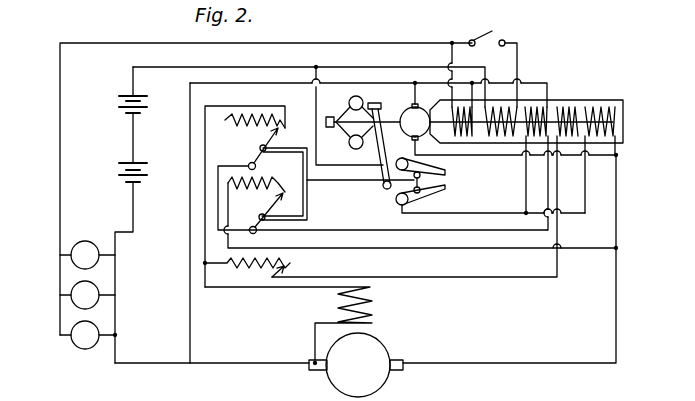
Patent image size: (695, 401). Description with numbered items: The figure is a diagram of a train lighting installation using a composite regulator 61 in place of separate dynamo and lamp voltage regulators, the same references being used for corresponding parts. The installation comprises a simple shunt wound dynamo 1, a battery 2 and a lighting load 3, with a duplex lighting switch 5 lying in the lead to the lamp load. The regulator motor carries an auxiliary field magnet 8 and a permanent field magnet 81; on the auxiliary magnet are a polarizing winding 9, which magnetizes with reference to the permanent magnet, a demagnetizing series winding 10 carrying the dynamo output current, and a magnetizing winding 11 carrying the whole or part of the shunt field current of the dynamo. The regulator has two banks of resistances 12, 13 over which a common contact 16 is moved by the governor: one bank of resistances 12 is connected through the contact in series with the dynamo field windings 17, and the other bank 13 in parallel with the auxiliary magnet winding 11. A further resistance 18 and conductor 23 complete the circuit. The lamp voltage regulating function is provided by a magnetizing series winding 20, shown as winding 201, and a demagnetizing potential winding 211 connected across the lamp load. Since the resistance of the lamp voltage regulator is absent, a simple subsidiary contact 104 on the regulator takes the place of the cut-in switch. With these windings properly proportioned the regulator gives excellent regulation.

The dynamo 1 is at (378, 348).
The battery 2 is at (131, 139).
The lighting load 3 is at (82, 242).
The duplex lighting switch 5 is at (488, 33).
The auxiliary field magnet 8 is at (437, 108).
The permanent field magnet 81 is at (592, 100).
The polarizing winding 9 is at (568, 107).
The demagnetizing series winding 10 is at (613, 122).
The magnetizing winding 11 is at (538, 107).
The bank of resistances 12 is at (225, 120).
The bank of resistances 13 is at (228, 184).
The common contact 16 is at (308, 202).
The dynamo field windings 17 is at (372, 302).
The rheostat 18 is at (283, 262).
The magnetizing series winding 20 is at (471, 136).
The magnetizing series winding 201 is at (505, 137).
The demagnetizing potential winding 211 is at (460, 137).
The conductor 23 is at (152, 43).
The composite regulator 61 is at (242, 145).
The subsidiary contact 104 is at (440, 196).